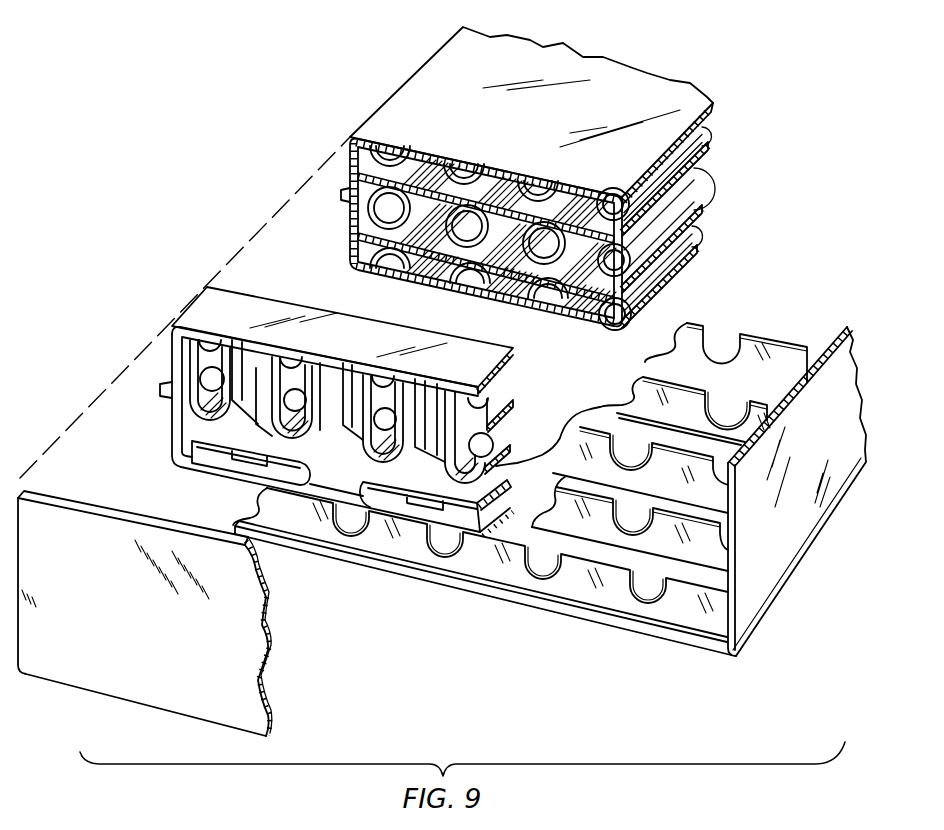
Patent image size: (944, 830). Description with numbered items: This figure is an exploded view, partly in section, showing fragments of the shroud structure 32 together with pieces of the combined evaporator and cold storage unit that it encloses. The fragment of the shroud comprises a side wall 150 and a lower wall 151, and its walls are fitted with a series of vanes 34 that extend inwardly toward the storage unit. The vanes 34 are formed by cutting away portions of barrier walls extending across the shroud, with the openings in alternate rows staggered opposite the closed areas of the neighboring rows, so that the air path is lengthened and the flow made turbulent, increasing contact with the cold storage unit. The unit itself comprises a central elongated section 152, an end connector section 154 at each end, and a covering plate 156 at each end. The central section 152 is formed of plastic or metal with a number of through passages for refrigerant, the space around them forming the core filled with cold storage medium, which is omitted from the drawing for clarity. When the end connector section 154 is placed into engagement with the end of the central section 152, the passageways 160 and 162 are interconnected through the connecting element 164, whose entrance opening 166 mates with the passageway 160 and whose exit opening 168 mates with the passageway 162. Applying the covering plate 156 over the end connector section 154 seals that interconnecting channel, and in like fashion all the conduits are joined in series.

The shroud structure 32 is at (798, 588).
The vanes 34 is at (772, 343).
The side wall 150 is at (757, 597).
The lower wall 151 is at (567, 622).
The central elongated section 152 is at (397, 78).
The end connector section 154 is at (217, 308).
The covering plate 156 is at (107, 660).
The passageway 160 is at (383, 152).
The passageway 162 is at (376, 215).
The connecting element 164 is at (237, 373).
The entrance opening 166 is at (216, 342).
The exit opening 168 is at (208, 378).